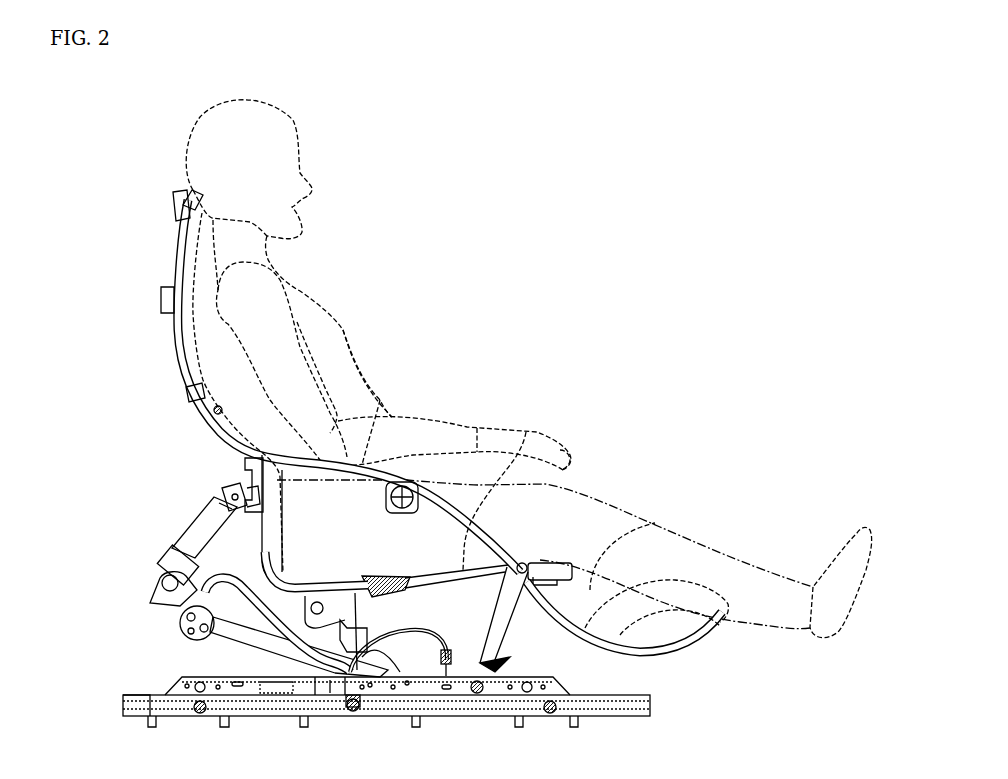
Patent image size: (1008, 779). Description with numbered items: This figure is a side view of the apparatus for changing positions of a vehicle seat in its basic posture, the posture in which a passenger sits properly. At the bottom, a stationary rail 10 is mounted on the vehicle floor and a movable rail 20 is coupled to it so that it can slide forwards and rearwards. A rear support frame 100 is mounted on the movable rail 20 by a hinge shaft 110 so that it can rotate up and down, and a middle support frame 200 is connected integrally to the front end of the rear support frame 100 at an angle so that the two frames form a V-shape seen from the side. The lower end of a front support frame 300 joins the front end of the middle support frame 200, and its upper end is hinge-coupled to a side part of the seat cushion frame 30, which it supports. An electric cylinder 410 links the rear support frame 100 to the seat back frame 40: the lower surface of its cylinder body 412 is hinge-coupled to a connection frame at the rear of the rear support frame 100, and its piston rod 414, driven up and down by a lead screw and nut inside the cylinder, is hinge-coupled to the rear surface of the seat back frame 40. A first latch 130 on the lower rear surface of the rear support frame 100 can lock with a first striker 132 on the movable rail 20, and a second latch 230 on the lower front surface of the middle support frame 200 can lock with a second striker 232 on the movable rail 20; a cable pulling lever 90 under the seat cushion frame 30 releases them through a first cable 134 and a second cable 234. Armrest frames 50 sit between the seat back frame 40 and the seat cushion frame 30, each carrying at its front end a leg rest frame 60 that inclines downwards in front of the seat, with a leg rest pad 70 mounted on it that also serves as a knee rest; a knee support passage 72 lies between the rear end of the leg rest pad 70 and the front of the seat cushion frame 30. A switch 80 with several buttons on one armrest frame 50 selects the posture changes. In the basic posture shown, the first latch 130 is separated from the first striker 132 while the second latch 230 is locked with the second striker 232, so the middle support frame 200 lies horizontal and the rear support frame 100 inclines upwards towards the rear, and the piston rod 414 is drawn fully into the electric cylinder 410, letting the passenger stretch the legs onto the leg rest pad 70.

The stationary rail 10 is at (615, 708).
The movable rail 20 is at (560, 712).
The seat cushion frame 30 is at (526, 432).
The seat back frame 40 is at (258, 469).
The armrest frame 50 is at (393, 415).
The leg rest frame 60 is at (685, 648).
The leg rest pad 70 is at (690, 593).
The knee support passage 72 is at (655, 523).
The switch 80 is at (473, 428).
The cable pulling lever 90 is at (408, 595).
The rear support frame 100 is at (253, 640).
The hinge shaft 110 is at (320, 693).
The first latch 130 is at (192, 633).
The first striker 132 is at (203, 693).
The first cable 134 is at (155, 596).
The middle support frame 200 is at (488, 693).
The second latch 230 is at (418, 693).
The second striker 232 is at (477, 693).
The second cable 234 is at (363, 705).
The front support frame 300 is at (573, 462).
The electric cylinder 410 is at (190, 532).
The cylinder body 412 is at (170, 546).
The piston rod 414 is at (223, 490).